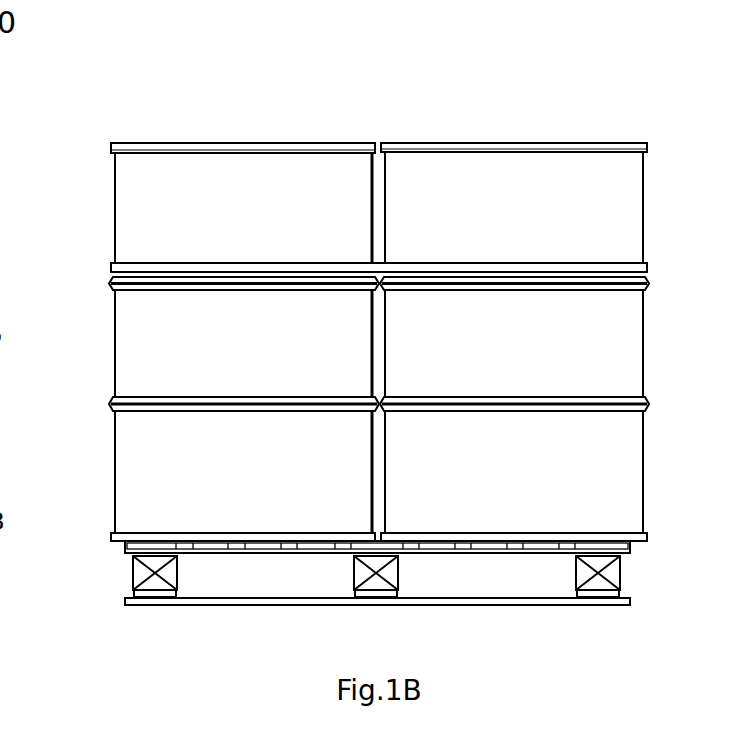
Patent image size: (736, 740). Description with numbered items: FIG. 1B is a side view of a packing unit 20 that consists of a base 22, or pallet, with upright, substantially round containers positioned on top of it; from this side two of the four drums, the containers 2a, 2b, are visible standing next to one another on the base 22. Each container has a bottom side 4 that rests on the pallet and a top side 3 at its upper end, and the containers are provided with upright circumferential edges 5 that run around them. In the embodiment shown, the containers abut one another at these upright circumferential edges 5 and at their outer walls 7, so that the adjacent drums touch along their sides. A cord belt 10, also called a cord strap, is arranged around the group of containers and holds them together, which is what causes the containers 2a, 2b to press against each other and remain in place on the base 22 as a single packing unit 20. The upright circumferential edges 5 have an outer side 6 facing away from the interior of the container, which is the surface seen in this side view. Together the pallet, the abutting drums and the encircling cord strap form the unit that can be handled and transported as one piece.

The container 2a is at (140, 432).
The container 2b is at (577, 178).
The top side 3 is at (301, 143).
The bottom side 4 is at (223, 538).
The upright circumferential edge 5 is at (157, 148).
The outer side 6 is at (107, 145).
The outer wall 7 is at (140, 244).
The cord belt 10 is at (633, 266).
The packing unit 20 is at (583, 124).
The base 22 is at (590, 590).